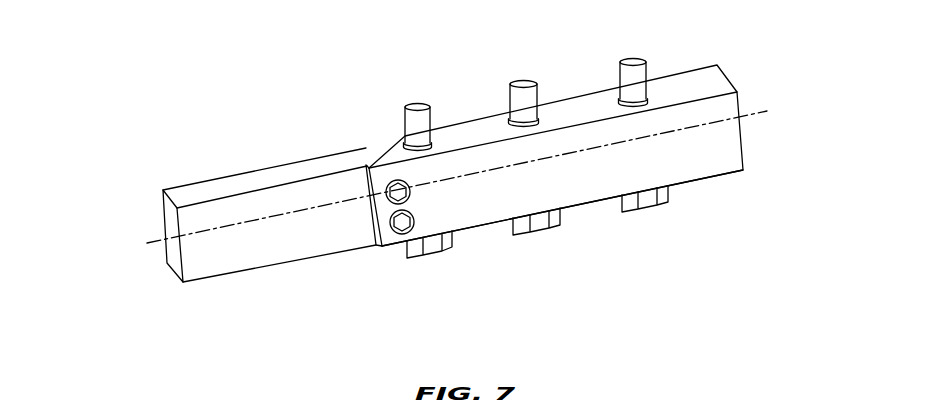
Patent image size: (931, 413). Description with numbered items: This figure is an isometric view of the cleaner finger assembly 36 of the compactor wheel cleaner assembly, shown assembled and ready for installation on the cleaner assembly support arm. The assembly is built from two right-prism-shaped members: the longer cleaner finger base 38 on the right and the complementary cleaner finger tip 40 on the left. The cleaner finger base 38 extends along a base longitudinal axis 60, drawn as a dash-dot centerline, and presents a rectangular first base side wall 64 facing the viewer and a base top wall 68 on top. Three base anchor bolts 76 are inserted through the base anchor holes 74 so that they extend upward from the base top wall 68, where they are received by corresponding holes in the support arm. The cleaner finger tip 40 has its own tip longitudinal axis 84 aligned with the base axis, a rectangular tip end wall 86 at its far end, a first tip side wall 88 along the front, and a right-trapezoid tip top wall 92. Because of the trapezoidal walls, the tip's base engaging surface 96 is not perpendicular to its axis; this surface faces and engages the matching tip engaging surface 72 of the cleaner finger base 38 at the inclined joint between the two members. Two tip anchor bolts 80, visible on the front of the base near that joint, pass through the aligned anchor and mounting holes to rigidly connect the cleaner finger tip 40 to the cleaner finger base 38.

The cleaner finger assembly 36 is at (251, 75).
The cleaner finger base 38 is at (592, 205).
The cleaner finger tip 40 is at (243, 227).
The base longitudinal axis 60 is at (568, 137).
The first base side wall 64 is at (715, 167).
The base top wall 68 is at (716, 82).
The tip engaging surface 72 is at (346, 169).
The base anchor holes 74 is at (437, 145).
The base anchor bolts 76 is at (548, 78).
The tip anchor bolts 80 is at (397, 232).
The tip longitudinal axis 84 is at (568, 137).
The tip end wall 86 is at (168, 225).
The first tip side wall 88 is at (203, 274).
The tip top wall 92 is at (218, 187).
The base engaging surface 96 is at (368, 166).